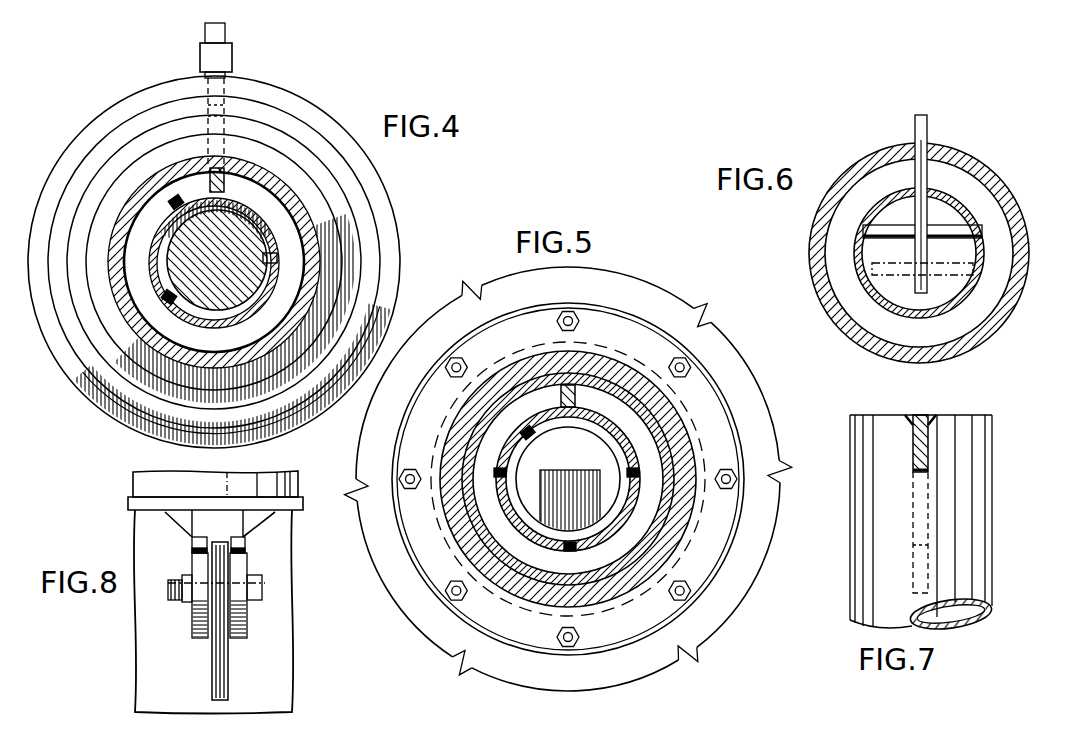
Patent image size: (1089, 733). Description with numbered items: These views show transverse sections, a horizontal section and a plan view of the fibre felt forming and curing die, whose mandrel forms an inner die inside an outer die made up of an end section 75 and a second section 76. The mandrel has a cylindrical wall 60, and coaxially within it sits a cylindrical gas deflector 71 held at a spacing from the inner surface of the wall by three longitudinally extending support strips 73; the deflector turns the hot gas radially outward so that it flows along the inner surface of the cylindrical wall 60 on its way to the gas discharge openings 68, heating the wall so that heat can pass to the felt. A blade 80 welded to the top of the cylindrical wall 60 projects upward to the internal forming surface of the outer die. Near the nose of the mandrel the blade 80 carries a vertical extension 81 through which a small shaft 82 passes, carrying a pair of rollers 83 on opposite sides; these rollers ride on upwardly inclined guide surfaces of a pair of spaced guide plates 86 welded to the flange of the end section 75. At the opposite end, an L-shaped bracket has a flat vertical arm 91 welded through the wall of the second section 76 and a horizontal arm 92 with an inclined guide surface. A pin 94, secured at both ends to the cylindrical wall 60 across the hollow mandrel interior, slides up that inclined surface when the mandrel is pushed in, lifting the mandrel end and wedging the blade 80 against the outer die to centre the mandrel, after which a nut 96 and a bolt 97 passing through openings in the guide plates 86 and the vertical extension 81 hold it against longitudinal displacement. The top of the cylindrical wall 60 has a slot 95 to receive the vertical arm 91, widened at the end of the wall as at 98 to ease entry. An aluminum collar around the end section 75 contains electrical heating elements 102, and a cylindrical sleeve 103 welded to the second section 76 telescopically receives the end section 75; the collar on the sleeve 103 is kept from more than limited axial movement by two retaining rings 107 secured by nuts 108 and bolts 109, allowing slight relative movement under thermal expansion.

In FIG. 4, the cylindrical wall 60 is at (280, 236).
In FIG. 6, the cylindrical wall 60 is at (932, 319).
In FIG. 7, the cylindrical wall 60 is at (900, 503).
In FIG. 8, the cylindrical wall 60 is at (178, 673).
In FIG. 5, the gas discharge openings 68 is at (626, 478).
In FIG. 4, the cylindrical gas deflector 71 is at (249, 292).
In FIG. 5, the cylindrical gas deflector 71 is at (590, 458).
In FIG. 4, the longitudinally extending support strips 73 is at (180, 204).
In FIG. 5, the longitudinally extending support strips 73 is at (504, 458).
In FIG. 4, the end section of the outer die 75 is at (198, 164).
In FIG. 5, the end section of the outer die 75 is at (531, 428).
In FIG. 6, the second section of the outer die 76 is at (1016, 284).
In FIG. 4, the blade 80 is at (222, 184).
In FIG. 5, the blade 80 is at (575, 395).
In FIG. 8, the vertical extension 81 is at (222, 683).
In FIG. 8, the small shaft 82 is at (208, 533).
In FIG. 8, the rollers 83 is at (193, 548).
In FIG. 8, the guide plates 86 is at (193, 615).
In FIG. 6, the vertical arm 91 is at (921, 136).
In FIG. 7, the vertical arm 91 is at (913, 433).
In FIG. 6, the horizontal arm 92 is at (925, 266).
In FIG. 6, the pin 94 is at (876, 238).
In FIG. 7, the slot 95 is at (920, 452).
In FIG. 8, the nut 96 is at (186, 578).
In FIG. 8, the bolt 97 is at (252, 585).
In FIG. 7, the widened end of the slot 98 is at (930, 415).
In FIG. 4, the electrical heating elements 102 is at (303, 137).
In FIG. 5, the cylindrical sleeve 103 is at (682, 451).
In FIG. 5, the retaining rings 107 is at (705, 395).
In FIG. 5, the nuts 108 is at (666, 603).
In FIG. 5, the bolts 109 is at (686, 579).